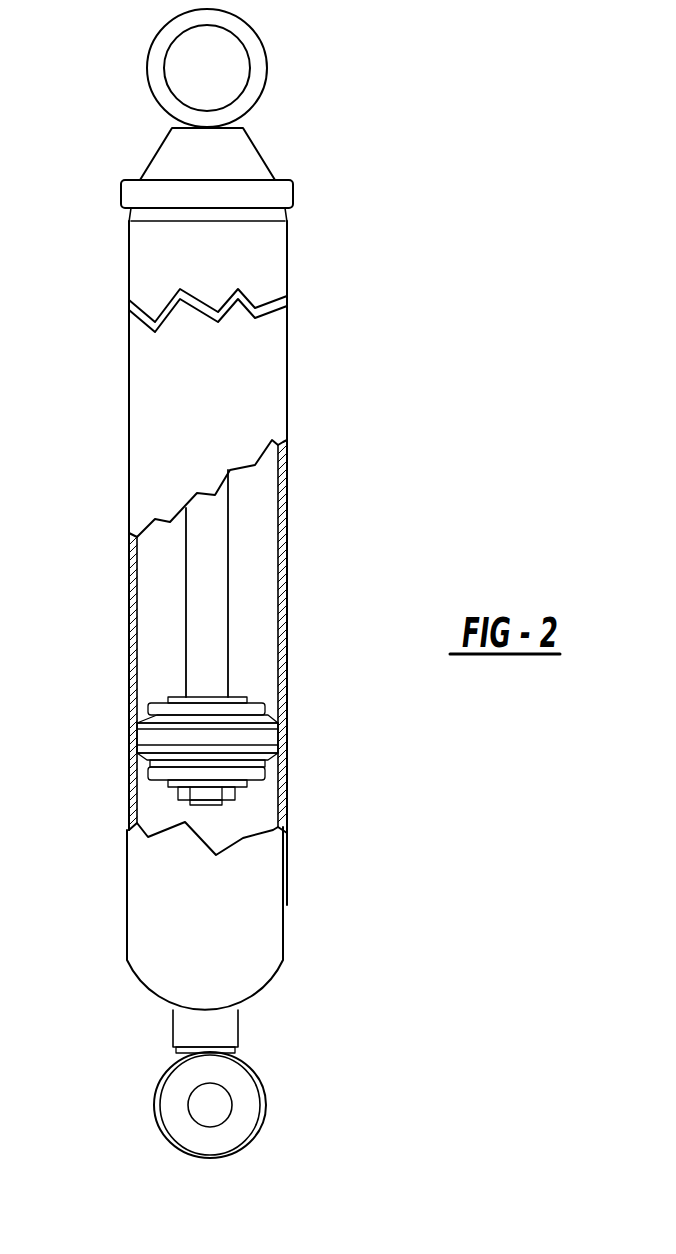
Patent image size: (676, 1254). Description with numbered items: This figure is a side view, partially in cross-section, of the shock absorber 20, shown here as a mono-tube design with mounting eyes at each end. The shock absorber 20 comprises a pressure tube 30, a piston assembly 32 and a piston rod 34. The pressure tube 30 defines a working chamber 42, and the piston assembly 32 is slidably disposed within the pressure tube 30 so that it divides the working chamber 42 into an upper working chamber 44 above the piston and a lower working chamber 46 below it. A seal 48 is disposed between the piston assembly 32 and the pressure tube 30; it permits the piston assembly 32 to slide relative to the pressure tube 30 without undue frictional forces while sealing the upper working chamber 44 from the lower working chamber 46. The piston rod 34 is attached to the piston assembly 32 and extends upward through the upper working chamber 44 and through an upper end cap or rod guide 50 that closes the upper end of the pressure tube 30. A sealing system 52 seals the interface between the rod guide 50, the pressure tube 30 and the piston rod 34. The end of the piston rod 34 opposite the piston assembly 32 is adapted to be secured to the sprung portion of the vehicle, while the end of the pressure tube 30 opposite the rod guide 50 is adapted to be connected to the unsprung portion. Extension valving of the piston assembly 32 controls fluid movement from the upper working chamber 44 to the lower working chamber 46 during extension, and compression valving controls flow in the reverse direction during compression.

The shock absorber 20 is at (216, 583).
The sealing system 52 is at (235, 168).
The rod guide 50 is at (273, 216).
The pressure tube 30 is at (285, 493).
The upper working chamber 44 is at (268, 533).
The working chamber 42 is at (162, 603).
The piston rod 34 is at (208, 612).
The seal 48 is at (143, 742).
The piston assembly 32 is at (263, 740).
The lower working chamber 46 is at (160, 807).